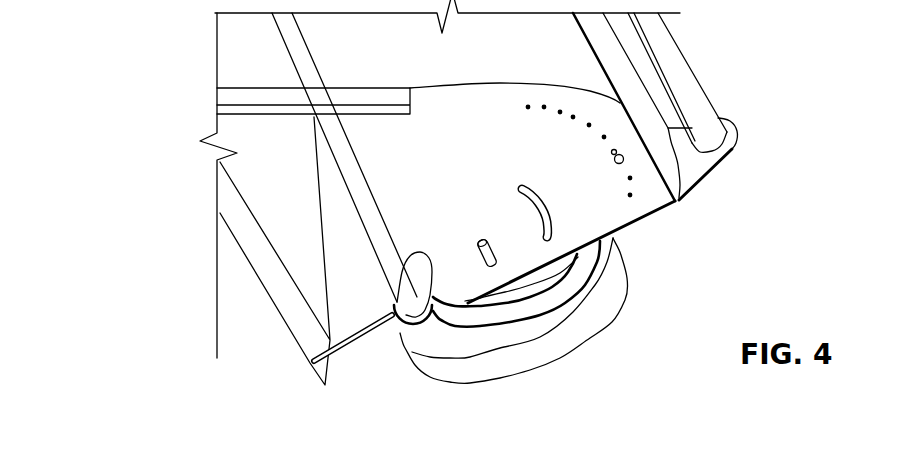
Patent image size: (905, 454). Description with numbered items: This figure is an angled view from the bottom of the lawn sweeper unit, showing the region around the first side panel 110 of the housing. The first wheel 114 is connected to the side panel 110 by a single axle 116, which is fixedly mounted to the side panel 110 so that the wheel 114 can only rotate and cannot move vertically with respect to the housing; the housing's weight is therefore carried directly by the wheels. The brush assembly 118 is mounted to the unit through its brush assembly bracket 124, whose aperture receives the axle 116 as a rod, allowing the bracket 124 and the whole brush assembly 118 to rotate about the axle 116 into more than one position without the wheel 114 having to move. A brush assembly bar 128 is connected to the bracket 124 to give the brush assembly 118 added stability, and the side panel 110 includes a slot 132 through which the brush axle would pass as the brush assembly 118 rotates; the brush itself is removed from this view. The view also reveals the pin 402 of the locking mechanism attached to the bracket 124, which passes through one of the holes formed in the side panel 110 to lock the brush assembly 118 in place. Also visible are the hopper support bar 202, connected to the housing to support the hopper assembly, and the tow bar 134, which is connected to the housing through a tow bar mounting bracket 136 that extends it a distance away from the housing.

The first side panel 110 is at (447, 285).
The first wheel 114 is at (607, 325).
The axle 116 is at (478, 233).
The brush assembly 118 is at (352, 152).
The brush assembly bracket 124 is at (392, 328).
The brush assembly bar 128 is at (307, 70).
The slot 132 is at (535, 188).
The tow bar 134 is at (678, 78).
The tow bar mounting bracket 136 is at (693, 160).
The hopper support bar 202 is at (400, 100).
The pin 402 is at (617, 163).